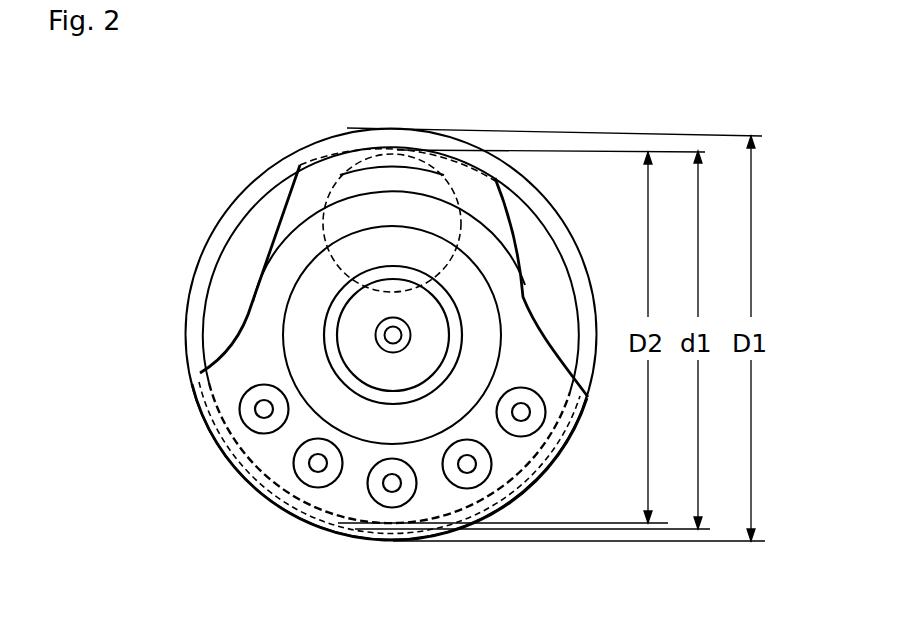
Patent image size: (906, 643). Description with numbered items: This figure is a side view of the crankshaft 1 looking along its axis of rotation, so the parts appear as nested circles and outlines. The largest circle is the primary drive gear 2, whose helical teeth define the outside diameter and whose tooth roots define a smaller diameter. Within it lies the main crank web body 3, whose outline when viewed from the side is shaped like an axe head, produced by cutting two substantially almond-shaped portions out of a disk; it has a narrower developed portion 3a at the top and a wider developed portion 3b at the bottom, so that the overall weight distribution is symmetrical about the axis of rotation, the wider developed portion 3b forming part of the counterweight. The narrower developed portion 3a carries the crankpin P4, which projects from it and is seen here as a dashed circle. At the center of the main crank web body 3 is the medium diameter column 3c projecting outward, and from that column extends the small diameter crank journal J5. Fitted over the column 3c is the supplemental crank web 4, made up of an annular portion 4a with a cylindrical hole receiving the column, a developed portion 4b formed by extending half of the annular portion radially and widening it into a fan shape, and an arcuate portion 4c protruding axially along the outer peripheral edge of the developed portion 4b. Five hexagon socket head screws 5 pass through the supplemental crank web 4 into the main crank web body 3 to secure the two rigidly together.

The golf club head 1 is at (413, 95).
The primary drive gear 2 is at (197, 250).
The main crank web body 3 is at (273, 222).
The narrower developed portion 3a is at (352, 149).
The wider developed portion 3b is at (342, 513).
The medium diameter column 3c is at (470, 307).
The supplemental crank web 4 is at (257, 337).
The annular portion 4a is at (473, 240).
The developed portion 4b is at (393, 543).
The arcuate portion 4c is at (278, 512).
The hexagon socket head screws 5 is at (313, 462).
The crank journal J5 is at (357, 350).
The crankpin P4 is at (330, 195).